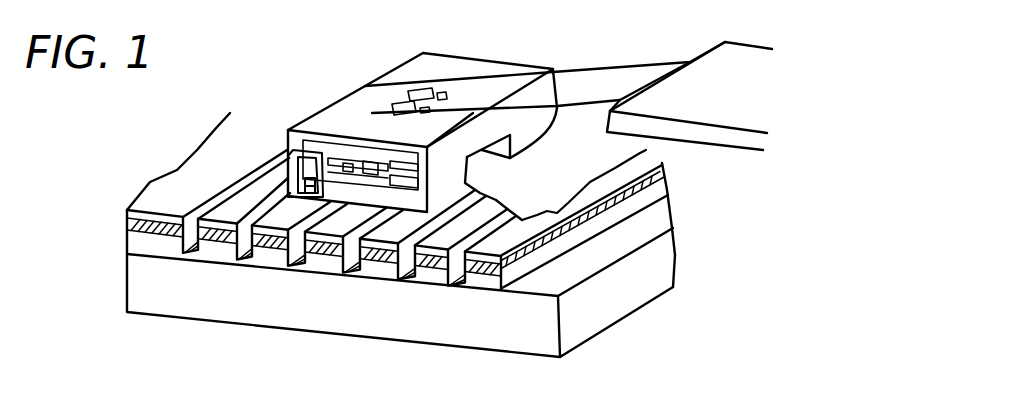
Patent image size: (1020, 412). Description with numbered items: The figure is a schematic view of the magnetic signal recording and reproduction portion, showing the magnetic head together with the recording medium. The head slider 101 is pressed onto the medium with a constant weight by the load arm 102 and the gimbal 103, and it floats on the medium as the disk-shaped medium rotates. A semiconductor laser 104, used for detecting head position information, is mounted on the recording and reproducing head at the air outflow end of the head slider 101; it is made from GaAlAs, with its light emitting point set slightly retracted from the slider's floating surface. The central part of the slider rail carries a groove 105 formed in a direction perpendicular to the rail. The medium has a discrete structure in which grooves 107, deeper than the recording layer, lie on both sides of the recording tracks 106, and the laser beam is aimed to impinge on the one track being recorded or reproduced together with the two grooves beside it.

The head slider 101 is at (470, 65).
The load arm 102 is at (607, 85).
The gimbal 103 is at (420, 86).
The semiconductor laser 104 is at (303, 163).
The groove 105 is at (477, 163).
The recording tracks 106 is at (207, 245).
The grooves 107 is at (247, 258).